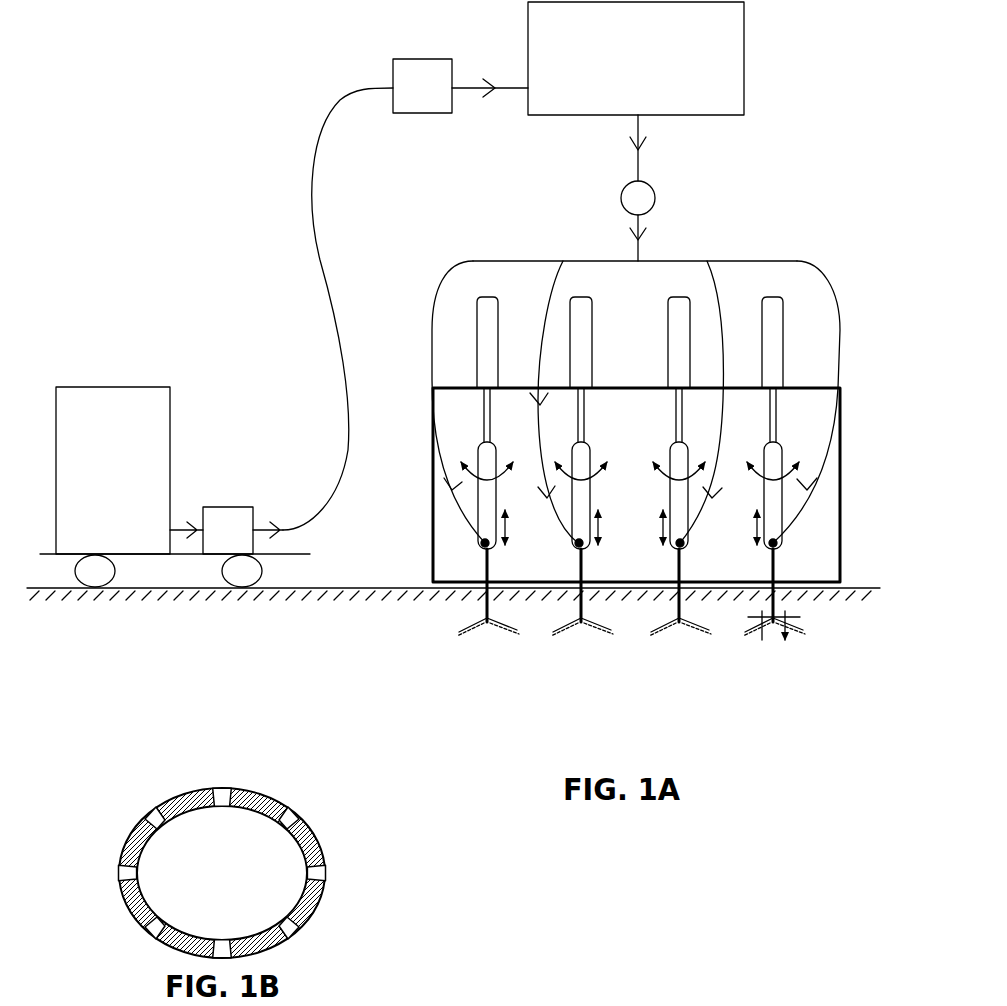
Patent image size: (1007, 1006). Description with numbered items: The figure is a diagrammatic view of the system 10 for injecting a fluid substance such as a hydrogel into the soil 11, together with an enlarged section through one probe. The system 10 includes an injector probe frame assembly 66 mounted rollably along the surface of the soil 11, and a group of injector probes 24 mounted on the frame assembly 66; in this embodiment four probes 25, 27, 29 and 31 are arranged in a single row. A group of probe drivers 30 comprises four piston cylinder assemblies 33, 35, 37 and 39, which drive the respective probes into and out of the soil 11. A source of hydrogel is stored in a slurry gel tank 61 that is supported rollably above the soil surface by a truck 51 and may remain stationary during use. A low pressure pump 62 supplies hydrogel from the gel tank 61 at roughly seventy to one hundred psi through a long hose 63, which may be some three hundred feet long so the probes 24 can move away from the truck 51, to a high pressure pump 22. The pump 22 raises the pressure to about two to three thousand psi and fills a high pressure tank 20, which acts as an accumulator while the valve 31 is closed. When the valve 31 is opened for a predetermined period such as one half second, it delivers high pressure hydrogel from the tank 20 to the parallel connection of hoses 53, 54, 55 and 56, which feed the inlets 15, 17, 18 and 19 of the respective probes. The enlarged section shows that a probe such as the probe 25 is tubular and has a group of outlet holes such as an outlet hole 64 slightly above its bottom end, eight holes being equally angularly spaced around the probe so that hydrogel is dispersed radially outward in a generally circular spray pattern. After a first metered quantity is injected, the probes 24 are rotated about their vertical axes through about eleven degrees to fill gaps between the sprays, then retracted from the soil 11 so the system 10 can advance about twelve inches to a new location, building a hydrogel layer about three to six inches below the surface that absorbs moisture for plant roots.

In FIG. 1A, the system 10 is at (107, 105).
In FIG. 1A, the high pressure tank 20 is at (744, 60).
In FIG. 1A, the high pressure pump 22 is at (428, 115).
In FIG. 1A, the valve 31 is at (655, 198).
In FIG. 1A, the probe drivers 30 is at (813, 302).
In FIG. 1A, the hose 56 is at (447, 280).
In FIG. 1A, the hose 55 is at (553, 275).
In FIG. 1A, the hose 54 is at (720, 281).
In FIG. 1A, the hose 53 is at (836, 378).
In FIG. 1A, the piston cylinder assembly 39 is at (477, 332).
In FIG. 1A, the piston cylinder assembly 37 is at (592, 363).
In FIG. 1A, the piston cylinder assembly 35 is at (668, 305).
In FIG. 1A, the piston cylinder assembly 33 is at (783, 338).
In FIG. 1A, the injector probe frame assembly 66 is at (433, 520).
In FIG. 1A, the inlet 19 is at (489, 548).
In FIG. 1A, the inlet 18 is at (583, 548).
In FIG. 1A, the inlet 17 is at (684, 548).
In FIG. 1A, the inlet 15 is at (777, 548).
In FIG. 1A, the probe 29 is at (579, 613).
In FIG. 1A, the probe 27 is at (677, 613).
In FIG. 1A, the probe 25 is at (771, 615).
In FIG. 1B, the probe 25 is at (325, 838).
In FIG. 1A, the slurry gel tank 61 is at (170, 400).
In FIG. 1A, the low pressure pump 62 is at (214, 507).
In FIG. 1A, the long hose 63 is at (313, 203).
In FIG. 1A, the truck 51 is at (155, 556).
In FIG. 1A, the soil 11 is at (340, 588).
In FIG. 1A, the injector probes 24 is at (395, 620).
In FIG. 1B, the outlet hole 64 is at (322, 872).